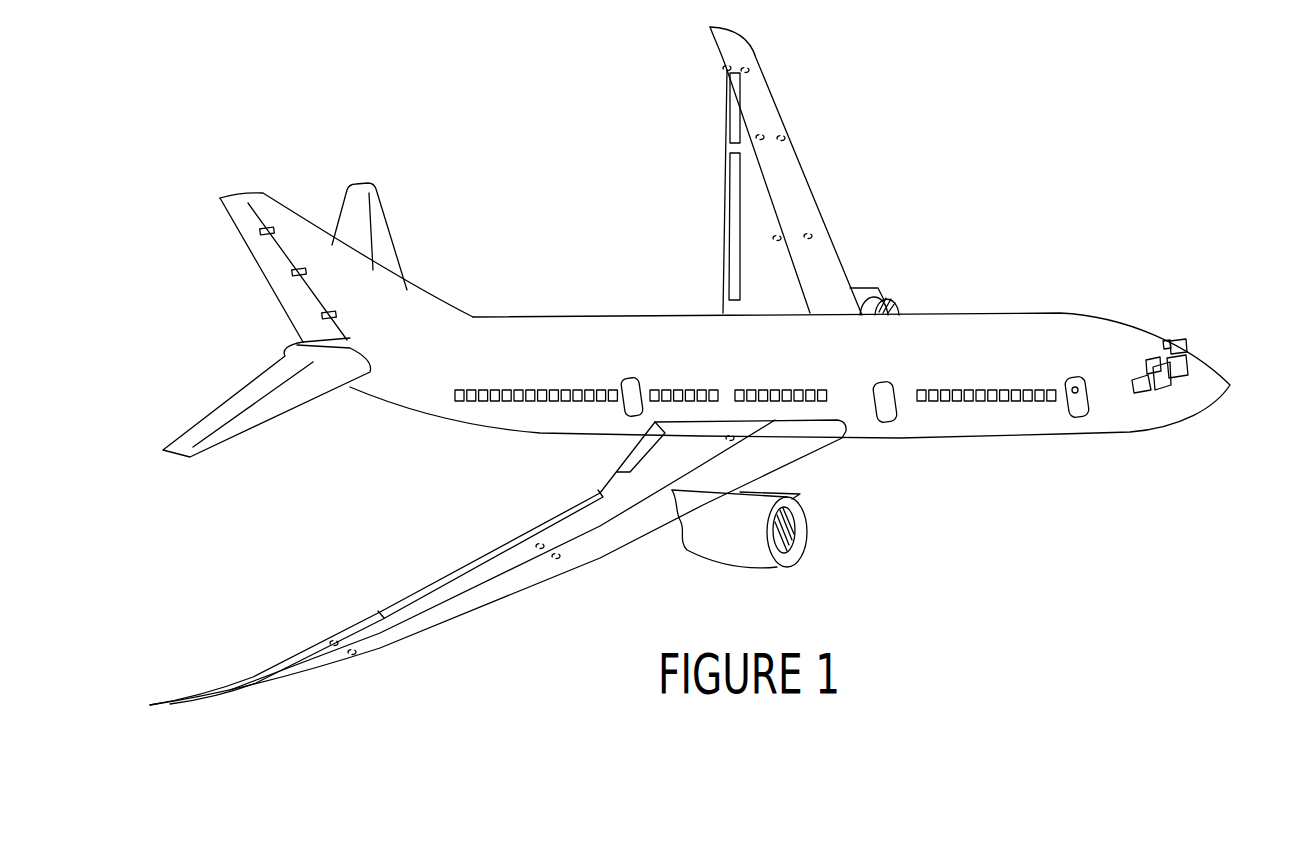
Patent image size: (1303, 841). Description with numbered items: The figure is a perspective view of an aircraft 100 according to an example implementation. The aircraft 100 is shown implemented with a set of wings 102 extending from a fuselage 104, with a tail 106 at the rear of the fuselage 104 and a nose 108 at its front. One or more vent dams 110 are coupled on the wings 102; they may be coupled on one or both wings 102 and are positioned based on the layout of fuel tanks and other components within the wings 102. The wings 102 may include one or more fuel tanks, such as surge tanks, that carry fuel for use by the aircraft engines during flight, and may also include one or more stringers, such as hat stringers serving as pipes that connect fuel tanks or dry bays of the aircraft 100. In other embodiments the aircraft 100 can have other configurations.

The aircraft 100 is at (987, 165).
The wings 102 is at (777, 100).
The fuselage 104 is at (580, 316).
The tail 106 is at (271, 207).
The nose 108 is at (1223, 381).
The vent dams 110 is at (745, 69).